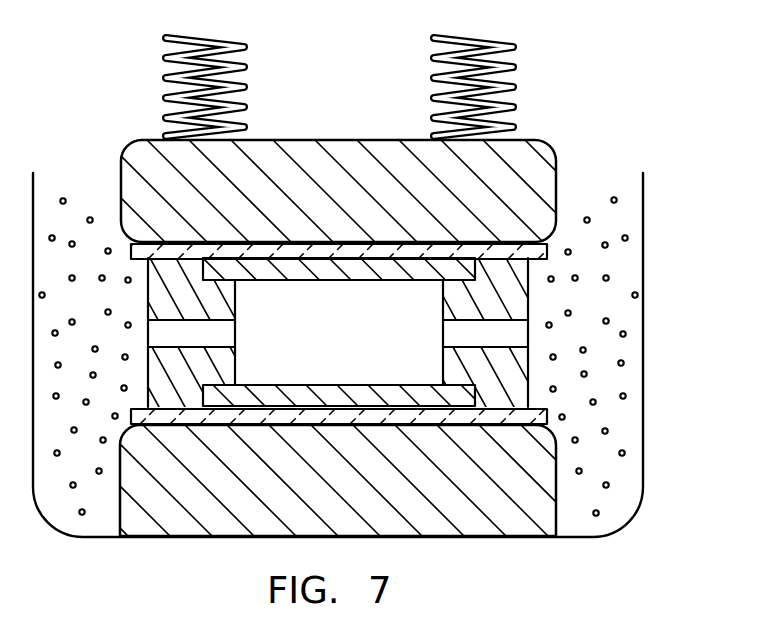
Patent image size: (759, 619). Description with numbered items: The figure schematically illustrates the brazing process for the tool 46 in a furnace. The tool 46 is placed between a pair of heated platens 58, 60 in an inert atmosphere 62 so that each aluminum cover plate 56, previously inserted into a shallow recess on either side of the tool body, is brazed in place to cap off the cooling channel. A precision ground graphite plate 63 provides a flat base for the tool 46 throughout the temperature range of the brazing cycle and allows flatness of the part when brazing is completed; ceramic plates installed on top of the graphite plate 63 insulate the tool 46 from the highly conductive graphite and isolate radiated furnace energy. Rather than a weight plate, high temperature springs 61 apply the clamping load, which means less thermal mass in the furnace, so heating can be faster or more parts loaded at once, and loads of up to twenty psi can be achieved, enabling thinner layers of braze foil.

The tool 46 is at (528, 362).
The cover plate 56 is at (420, 267).
The heated platen 58 is at (557, 485).
The heated platen 60 is at (556, 178).
The high temperature spring 61 is at (248, 67).
The inert atmosphere 62 is at (598, 350).
The graphite plate 63 is at (547, 250).